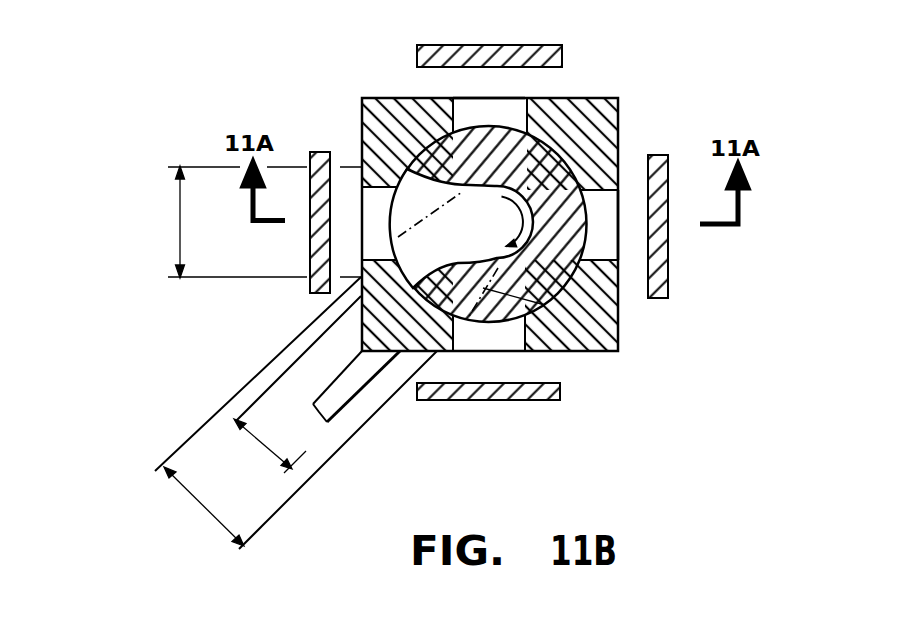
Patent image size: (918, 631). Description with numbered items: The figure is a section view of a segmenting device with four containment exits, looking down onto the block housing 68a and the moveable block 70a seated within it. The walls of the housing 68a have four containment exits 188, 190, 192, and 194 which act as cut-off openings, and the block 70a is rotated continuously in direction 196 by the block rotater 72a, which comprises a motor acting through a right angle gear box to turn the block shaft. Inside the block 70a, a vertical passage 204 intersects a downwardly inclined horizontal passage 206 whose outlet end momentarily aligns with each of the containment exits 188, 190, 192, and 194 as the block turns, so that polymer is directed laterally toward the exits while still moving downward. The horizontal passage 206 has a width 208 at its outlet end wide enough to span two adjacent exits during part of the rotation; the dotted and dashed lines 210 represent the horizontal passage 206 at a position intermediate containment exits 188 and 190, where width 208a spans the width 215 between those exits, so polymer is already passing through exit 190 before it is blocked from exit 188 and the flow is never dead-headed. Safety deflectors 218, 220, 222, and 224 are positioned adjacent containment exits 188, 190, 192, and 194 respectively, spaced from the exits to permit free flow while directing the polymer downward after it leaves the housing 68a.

The block housing 68a is at (582, 352).
The moveable block 70a is at (582, 190).
The block rotater 72a is at (322, 394).
The containment exit 188 is at (493, 352).
The containment exit 190 is at (362, 213).
The containment exit 192 is at (505, 98).
The containment exit 194 is at (620, 232).
The direction 196 is at (553, 208).
The vertical passage 204 is at (618, 102).
The downwardly inclined horizontal passage 206 is at (440, 168).
The width 208 is at (237, 222).
The width 208a is at (203, 508).
The dotted and dashed lines 210 is at (428, 225).
The width 215 is at (266, 448).
The safety deflector 218 is at (497, 400).
The safety deflector 220 is at (310, 252).
The safety deflector 222 is at (465, 45).
The safety deflector 224 is at (668, 253).